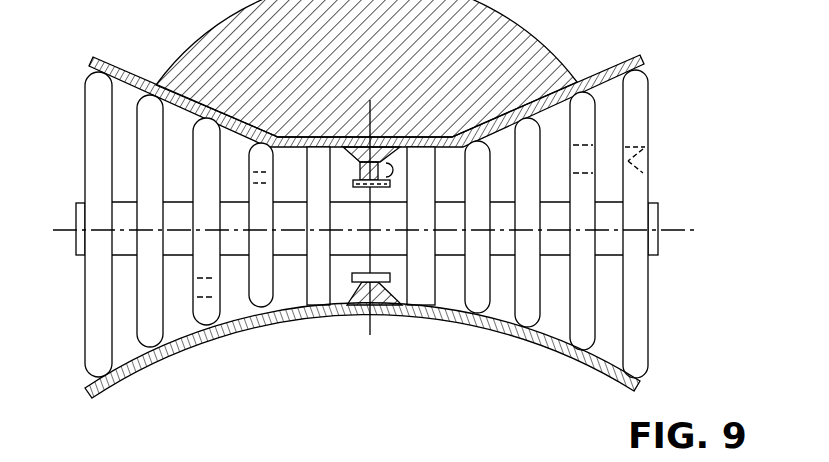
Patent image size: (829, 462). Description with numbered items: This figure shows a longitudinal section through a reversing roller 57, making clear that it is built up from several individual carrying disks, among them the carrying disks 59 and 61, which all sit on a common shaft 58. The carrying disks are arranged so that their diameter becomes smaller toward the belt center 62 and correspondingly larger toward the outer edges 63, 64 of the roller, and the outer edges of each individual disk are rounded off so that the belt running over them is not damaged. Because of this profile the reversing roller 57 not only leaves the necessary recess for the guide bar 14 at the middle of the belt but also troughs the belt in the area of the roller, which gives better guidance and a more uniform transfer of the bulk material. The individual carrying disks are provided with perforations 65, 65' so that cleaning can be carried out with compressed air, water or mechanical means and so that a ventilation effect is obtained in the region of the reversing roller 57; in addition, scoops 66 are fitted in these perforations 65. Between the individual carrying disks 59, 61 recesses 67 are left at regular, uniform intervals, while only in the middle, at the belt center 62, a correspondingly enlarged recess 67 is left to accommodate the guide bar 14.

The guide bar 14 is at (352, 224).
The reversing roller 57 is at (141, 407).
The common shaft 58 is at (662, 227).
The carrying disk 59 is at (212, 274).
The carrying disk 61 is at (423, 290).
The belt center 62 is at (372, 323).
The outer edge 63 is at (640, 330).
The outer edge 64 is at (85, 147).
The perforation 65 is at (662, 153).
The perforation 65' is at (632, 221).
The scoop 66 is at (322, 280).
The recess 67 is at (353, 183).